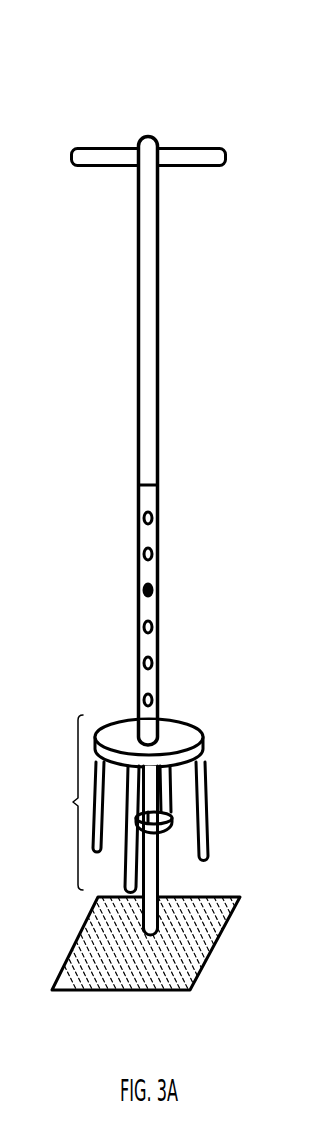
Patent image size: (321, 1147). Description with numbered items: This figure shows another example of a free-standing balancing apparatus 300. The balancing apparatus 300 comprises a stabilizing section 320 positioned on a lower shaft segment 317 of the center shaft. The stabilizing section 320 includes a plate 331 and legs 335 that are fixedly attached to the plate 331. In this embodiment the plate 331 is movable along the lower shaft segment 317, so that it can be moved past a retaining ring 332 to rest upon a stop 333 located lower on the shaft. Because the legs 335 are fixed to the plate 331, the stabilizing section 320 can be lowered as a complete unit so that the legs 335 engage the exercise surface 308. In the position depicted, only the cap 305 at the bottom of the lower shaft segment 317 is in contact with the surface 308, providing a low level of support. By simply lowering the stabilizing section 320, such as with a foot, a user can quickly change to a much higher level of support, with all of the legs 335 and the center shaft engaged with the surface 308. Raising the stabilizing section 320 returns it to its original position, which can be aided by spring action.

The balancing apparatus 300 is at (88, 112).
The lower shaft segment 317 is at (139, 504).
The retaining ring 332 is at (150, 807).
The plate 331 is at (173, 737).
The legs 335 is at (207, 787).
The stabilizing section 320 is at (56, 802).
The cap 305 is at (137, 928).
The surface 308 is at (95, 960).
The stop 333 is at (169, 839).